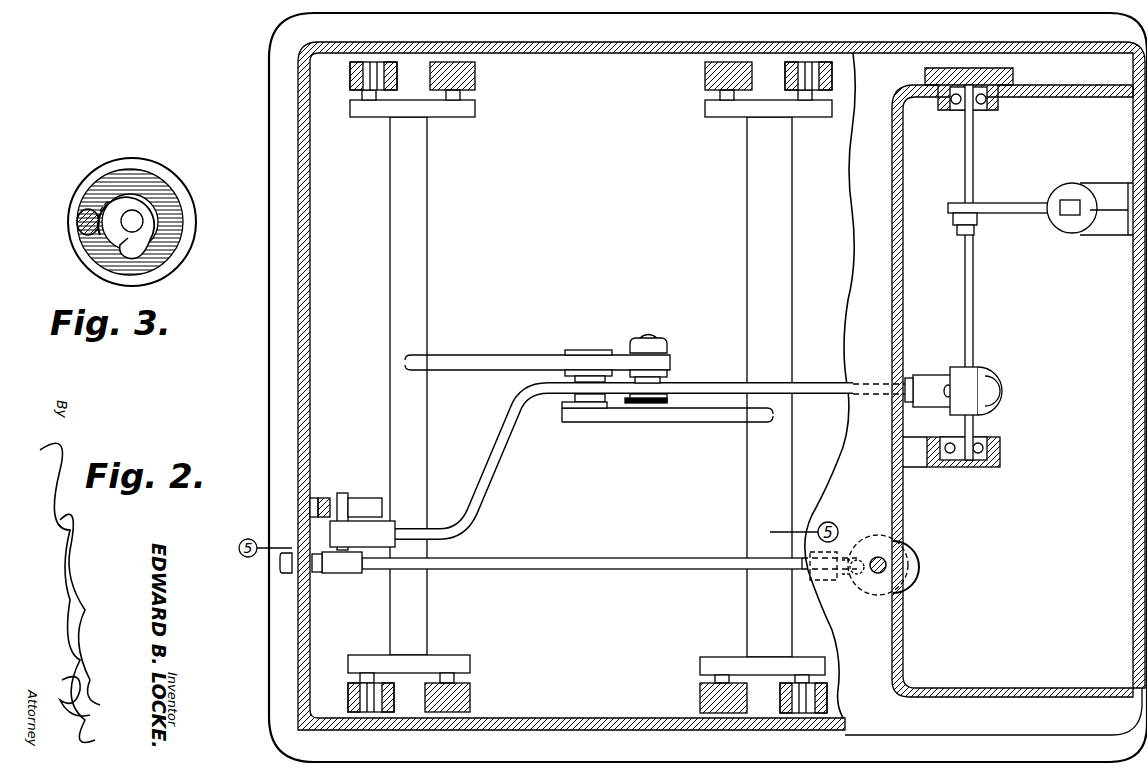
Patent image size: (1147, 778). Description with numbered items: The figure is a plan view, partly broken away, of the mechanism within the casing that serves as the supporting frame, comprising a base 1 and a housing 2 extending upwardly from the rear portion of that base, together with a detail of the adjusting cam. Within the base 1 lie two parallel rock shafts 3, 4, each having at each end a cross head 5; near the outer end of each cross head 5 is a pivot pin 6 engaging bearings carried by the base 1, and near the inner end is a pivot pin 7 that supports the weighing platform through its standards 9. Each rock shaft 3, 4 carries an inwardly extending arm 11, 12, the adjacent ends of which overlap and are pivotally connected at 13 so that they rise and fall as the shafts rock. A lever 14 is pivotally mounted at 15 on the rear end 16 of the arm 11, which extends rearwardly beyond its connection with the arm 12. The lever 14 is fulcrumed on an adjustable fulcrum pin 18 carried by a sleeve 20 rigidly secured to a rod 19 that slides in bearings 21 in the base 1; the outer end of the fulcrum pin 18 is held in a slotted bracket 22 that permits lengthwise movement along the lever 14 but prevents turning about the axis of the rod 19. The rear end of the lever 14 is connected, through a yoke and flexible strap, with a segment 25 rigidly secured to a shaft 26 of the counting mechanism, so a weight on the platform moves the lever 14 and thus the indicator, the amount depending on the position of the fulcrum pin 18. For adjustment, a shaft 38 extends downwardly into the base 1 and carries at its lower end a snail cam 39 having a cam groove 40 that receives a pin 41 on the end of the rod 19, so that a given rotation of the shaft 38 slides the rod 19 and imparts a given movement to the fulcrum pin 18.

In FIG. 2, the base 1 is at (302, 207).
In FIG. 2, the housing 2 is at (900, 512).
In FIG. 2, the rock shaft 3 is at (428, 266).
In FIG. 2, the rock shaft 4 is at (748, 255).
In FIG. 2, the cross head 5 is at (460, 118).
In FIG. 2, the pivot pin 6 is at (362, 96).
In FIG. 2, the pivot pin 7 is at (462, 97).
In FIG. 2, the standard 9 is at (476, 75).
In FIG. 2, the arm 11 is at (484, 361).
In FIG. 2, the arm 12 is at (655, 414).
In FIG. 2, the pivotal connection 13 is at (566, 404).
In FIG. 2, the lever 14 is at (500, 452).
In FIG. 2, the pivotal mounting 15 is at (672, 382).
In FIG. 2, the rear end 16 is at (660, 362).
In FIG. 2, the fulcrum pin 18 is at (341, 496).
In FIG. 2, the rod 19 is at (568, 558).
In FIG. 2, the sleeve 20 is at (348, 574).
In FIG. 2, the bearing 21 is at (278, 562).
In FIG. 2, the slotted bracket 22 is at (364, 506).
In FIG. 2, the segment 25 is at (928, 380).
In FIG. 2, the shaft 26 is at (975, 173).
In FIG. 3, the shaft 38 is at (137, 226).
In FIG. 2, the shaft 38 is at (885, 564).
In FIG. 3, the snail cam 39 is at (84, 187).
In FIG. 2, the snail cam 39 is at (902, 586).
In FIG. 3, the cam groove 40 is at (150, 190).
In FIG. 3, the pin 41 is at (78, 228).
In FIG. 2, the pin 41 is at (858, 560).